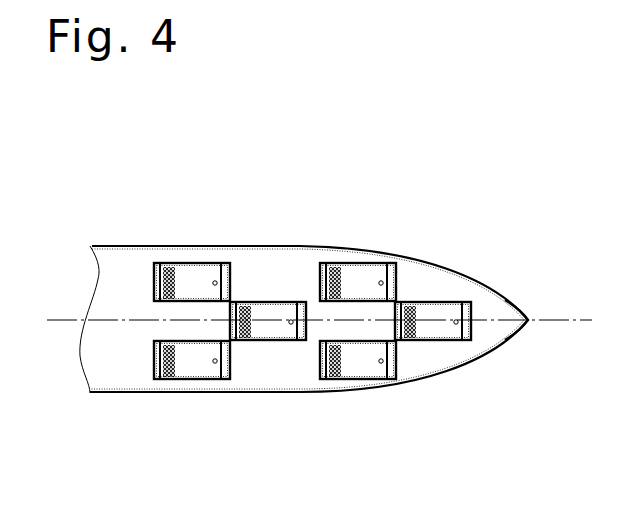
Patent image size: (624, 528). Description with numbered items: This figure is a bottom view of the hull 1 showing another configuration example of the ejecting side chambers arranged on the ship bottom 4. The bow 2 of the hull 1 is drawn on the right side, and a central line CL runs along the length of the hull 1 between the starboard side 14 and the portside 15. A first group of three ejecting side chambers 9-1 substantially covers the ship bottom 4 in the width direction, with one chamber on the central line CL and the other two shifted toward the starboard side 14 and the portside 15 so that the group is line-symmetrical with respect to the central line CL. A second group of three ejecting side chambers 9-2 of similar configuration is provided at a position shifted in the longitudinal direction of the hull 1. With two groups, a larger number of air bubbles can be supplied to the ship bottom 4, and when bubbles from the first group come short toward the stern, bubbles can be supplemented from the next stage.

The hull 1 is at (514, 190).
The bow 2 is at (530, 313).
The ship bottom 4 is at (124, 359).
The ejecting side chambers 9-1 is at (369, 245).
The ejecting side chambers 9-2 is at (204, 244).
The starboard side 14 is at (173, 246).
The portside 15 is at (173, 393).
The central line CL is at (566, 318).